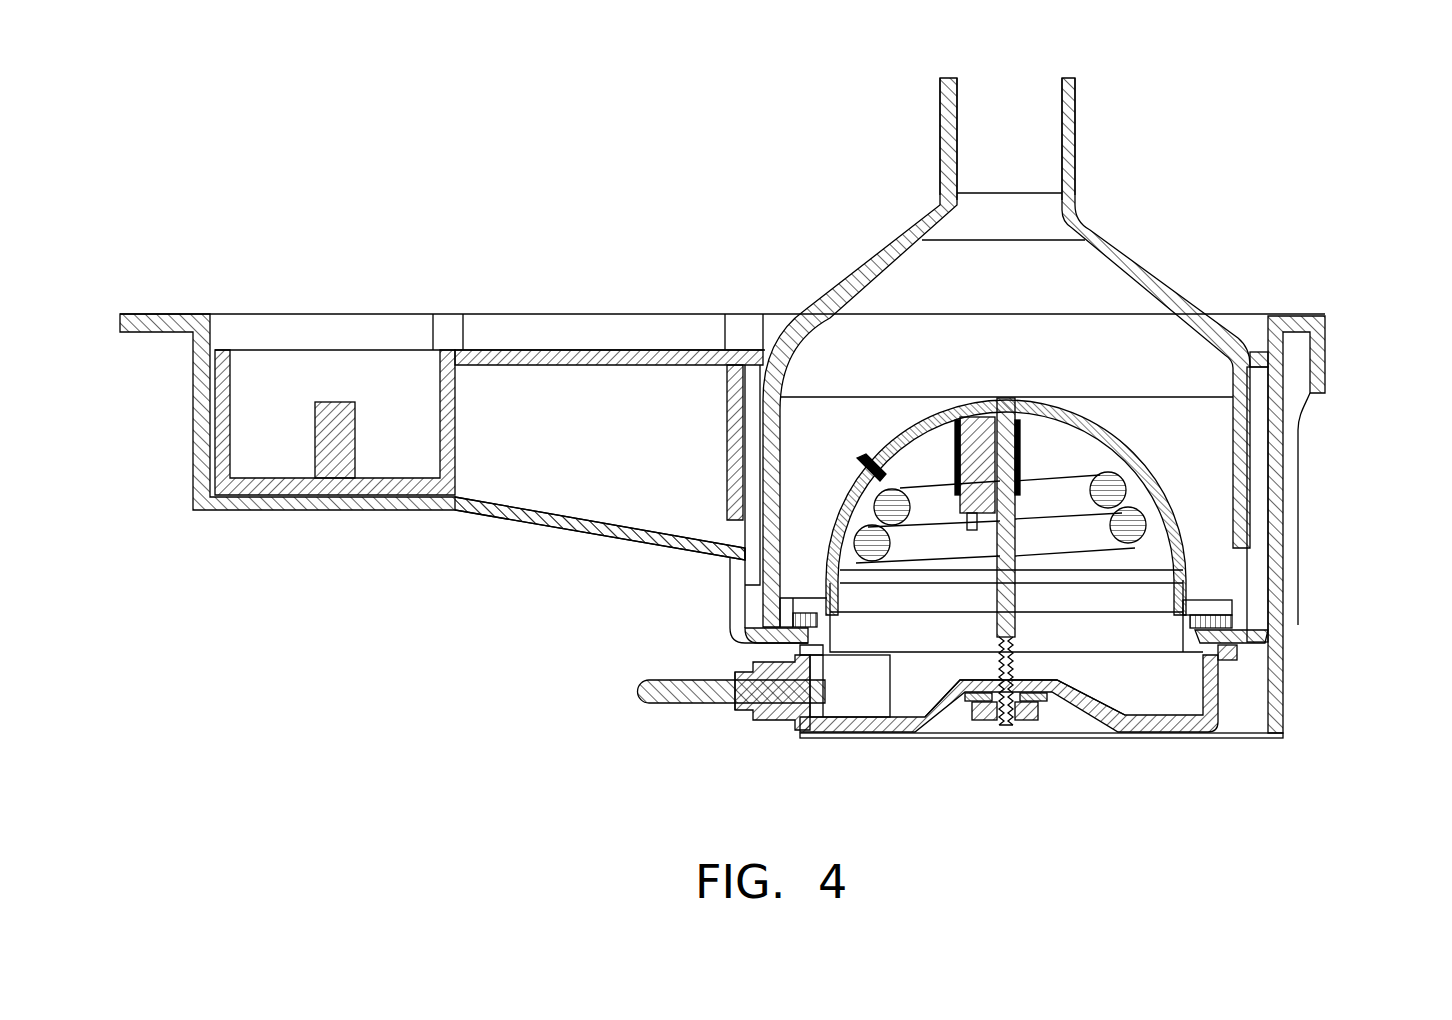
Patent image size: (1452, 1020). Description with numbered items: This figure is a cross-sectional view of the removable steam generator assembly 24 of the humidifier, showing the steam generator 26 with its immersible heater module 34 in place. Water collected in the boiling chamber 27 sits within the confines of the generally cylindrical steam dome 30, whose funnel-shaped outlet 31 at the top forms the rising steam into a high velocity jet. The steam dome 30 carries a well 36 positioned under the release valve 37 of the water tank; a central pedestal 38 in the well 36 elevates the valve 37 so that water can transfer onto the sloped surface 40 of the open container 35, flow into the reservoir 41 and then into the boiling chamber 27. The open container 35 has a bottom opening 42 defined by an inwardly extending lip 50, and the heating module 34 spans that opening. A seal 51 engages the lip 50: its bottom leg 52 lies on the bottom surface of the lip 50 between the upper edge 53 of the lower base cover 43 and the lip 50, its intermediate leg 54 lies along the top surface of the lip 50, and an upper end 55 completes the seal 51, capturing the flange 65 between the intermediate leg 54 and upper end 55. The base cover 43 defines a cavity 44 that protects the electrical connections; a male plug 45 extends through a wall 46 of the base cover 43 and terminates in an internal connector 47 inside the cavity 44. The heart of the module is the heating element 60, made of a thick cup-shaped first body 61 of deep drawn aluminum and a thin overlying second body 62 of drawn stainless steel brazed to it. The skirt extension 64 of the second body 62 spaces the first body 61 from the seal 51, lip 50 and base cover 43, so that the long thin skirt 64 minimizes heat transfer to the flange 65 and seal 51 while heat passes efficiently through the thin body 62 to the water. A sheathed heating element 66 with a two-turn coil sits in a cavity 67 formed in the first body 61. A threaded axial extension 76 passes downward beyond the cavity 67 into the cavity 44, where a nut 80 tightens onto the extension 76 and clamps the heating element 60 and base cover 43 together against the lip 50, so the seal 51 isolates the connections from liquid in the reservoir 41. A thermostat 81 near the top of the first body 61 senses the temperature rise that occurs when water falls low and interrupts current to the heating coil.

The removable steam generator assembly 24 is at (372, 572).
The steam generator 26 is at (1358, 488).
The boiling chamber 27 is at (1237, 330).
The steam dome 30 is at (915, 235).
The outlet 31 is at (1008, 140).
The immersible heater module 34 is at (1112, 487).
The open container 35 is at (1283, 470).
The well 36 is at (267, 397).
The release valve 37 is at (525, 475).
The central pedestal 38 is at (333, 455).
The sloped surface 40 is at (597, 517).
The reservoir 41 is at (752, 558).
The bottom opening 42 is at (1165, 728).
The lower base cover 43 is at (1220, 708).
The cavity 44 is at (958, 695).
The male plug 45 is at (700, 705).
The wall 46 is at (812, 728).
The internal connector 47 is at (862, 705).
The inwardly extending lip 50 is at (1230, 638).
The seal 51 is at (1235, 605).
The bottom leg 52 is at (790, 660).
The upper edge 53 is at (757, 722).
The intermediate leg 54 is at (838, 700).
The upper end 55 is at (735, 596).
The heating element 60 is at (863, 460).
The first body 61 is at (872, 450).
The second overlying body 62 is at (893, 453).
The skirt extension 64 is at (907, 597).
The flange 65 is at (1215, 600).
The heating element 66 is at (1190, 423).
The cavity 67 is at (1063, 440).
The threaded axial extension 76 is at (1090, 700).
The nut 80 is at (1037, 712).
The thermostat 81 is at (983, 400).